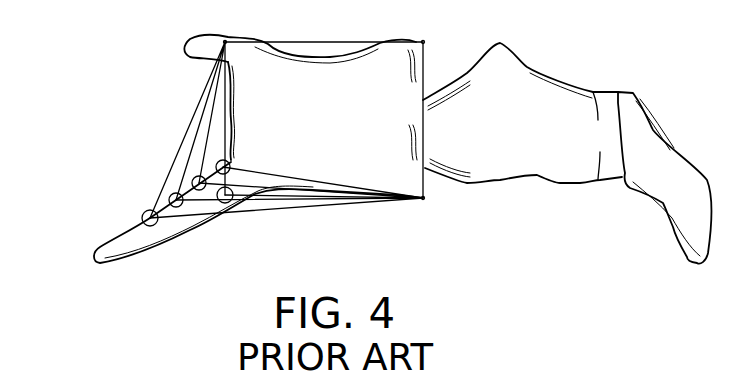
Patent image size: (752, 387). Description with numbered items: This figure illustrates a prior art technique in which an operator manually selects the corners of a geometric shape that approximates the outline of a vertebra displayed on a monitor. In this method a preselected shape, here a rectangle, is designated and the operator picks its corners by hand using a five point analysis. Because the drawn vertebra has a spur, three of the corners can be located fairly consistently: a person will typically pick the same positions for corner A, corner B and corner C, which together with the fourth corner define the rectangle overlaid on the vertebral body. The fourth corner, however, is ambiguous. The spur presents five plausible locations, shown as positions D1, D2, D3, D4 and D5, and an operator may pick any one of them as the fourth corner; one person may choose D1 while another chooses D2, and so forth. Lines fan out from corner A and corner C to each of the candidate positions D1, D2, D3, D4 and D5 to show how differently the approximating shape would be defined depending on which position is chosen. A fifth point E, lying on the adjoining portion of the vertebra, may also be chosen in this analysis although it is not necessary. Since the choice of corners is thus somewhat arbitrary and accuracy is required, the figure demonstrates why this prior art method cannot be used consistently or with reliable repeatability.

The corner A is at (203, 26).
The corner B is at (427, 25).
The corner C is at (428, 217).
The fourth corner position D1 is at (217, 165).
The fourth corner position D2 is at (192, 181).
The fourth corner position D3 is at (226, 203).
The fourth corner position D4 is at (169, 200).
The fourth corner position D5 is at (142, 219).
The fifth point E is at (596, 136).